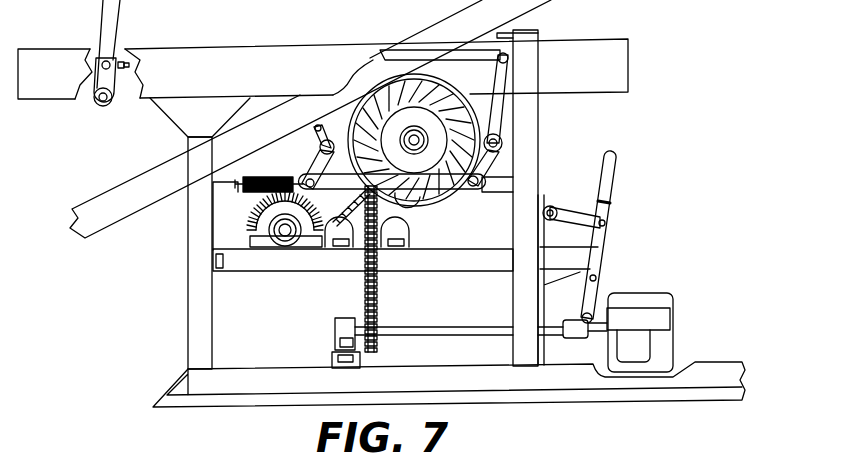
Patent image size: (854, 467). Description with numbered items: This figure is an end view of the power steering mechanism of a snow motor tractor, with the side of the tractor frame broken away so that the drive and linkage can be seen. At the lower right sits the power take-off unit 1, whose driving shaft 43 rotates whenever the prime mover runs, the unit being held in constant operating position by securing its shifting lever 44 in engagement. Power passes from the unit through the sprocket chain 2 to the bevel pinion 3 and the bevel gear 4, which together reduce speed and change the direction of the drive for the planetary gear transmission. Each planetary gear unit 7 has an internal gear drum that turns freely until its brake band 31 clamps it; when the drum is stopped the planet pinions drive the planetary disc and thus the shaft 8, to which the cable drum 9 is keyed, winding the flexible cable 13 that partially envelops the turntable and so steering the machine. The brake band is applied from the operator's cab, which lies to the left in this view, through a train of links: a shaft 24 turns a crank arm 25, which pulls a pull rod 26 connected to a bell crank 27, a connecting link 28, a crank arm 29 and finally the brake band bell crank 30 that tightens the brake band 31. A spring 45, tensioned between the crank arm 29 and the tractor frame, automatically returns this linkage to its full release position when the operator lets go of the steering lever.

The power take-off unit 1 is at (674, 331).
The sprocket chain 2 is at (380, 310).
The bevel pinion 3 is at (340, 220).
The bevel gear 4 is at (228, 226).
The planetary gear unit 7 is at (425, 190).
The shaft 8 is at (418, 136).
The cable drum 9 is at (460, 180).
The flexible cable 13 is at (390, 116).
The shaft 24 is at (98, 103).
The crank arm 25 is at (100, 72).
The pull rod 26 is at (418, 52).
The bell crank 27 is at (508, 120).
The connecting link 28 is at (405, 205).
The crank arm 29 is at (318, 166).
The brake band bell crank 30 is at (314, 134).
The brake band 31 is at (448, 188).
The driving shaft 43 is at (428, 331).
The shifting lever 44 is at (608, 236).
The spring 45 is at (235, 182).